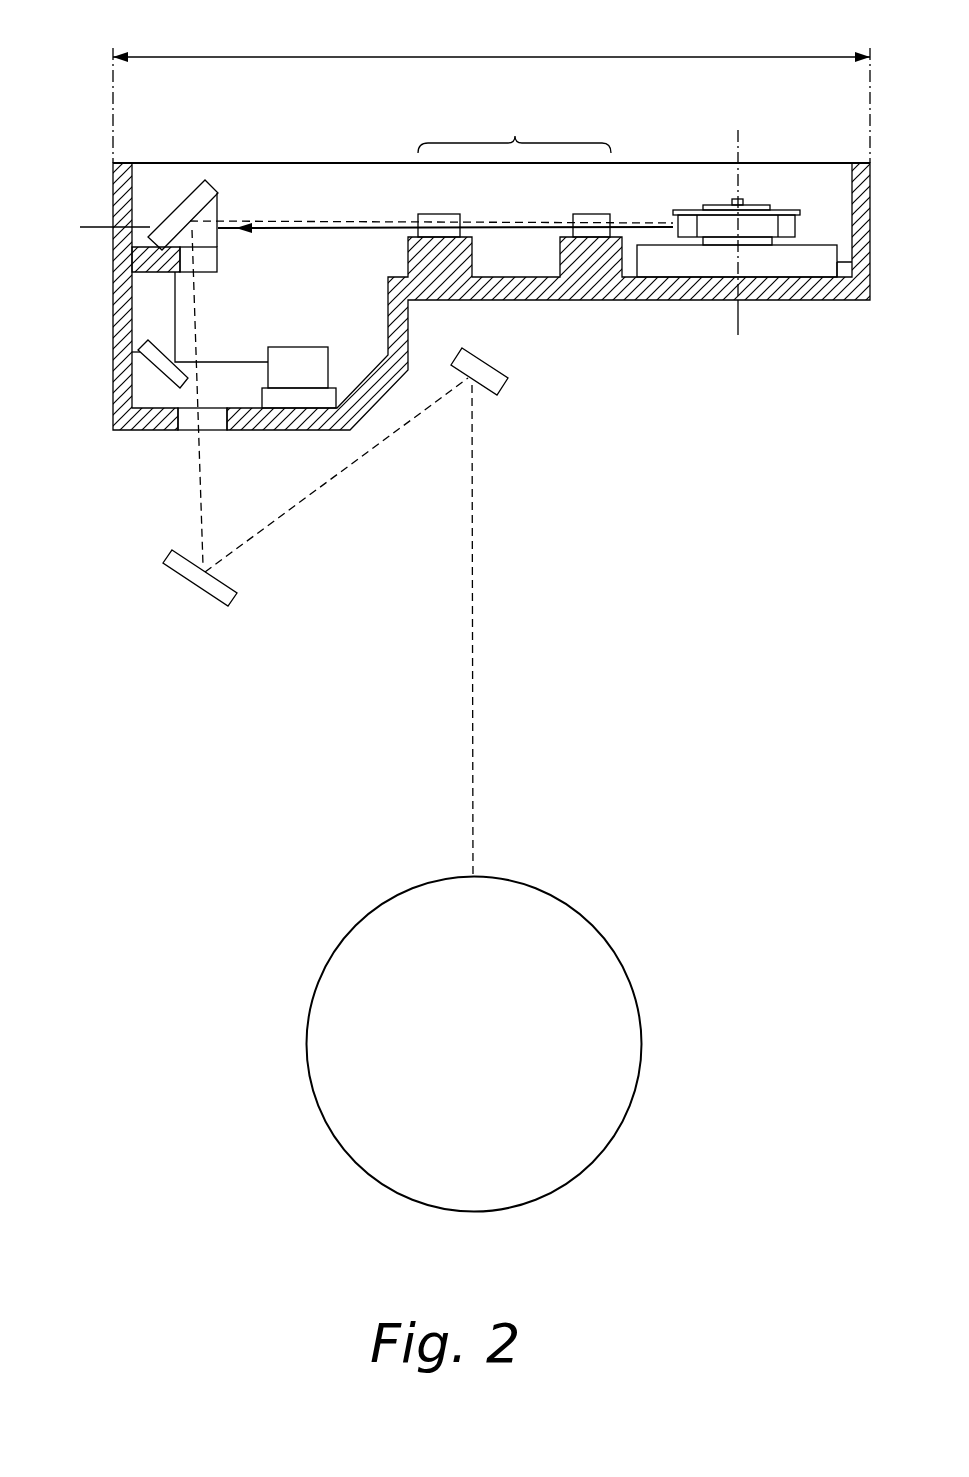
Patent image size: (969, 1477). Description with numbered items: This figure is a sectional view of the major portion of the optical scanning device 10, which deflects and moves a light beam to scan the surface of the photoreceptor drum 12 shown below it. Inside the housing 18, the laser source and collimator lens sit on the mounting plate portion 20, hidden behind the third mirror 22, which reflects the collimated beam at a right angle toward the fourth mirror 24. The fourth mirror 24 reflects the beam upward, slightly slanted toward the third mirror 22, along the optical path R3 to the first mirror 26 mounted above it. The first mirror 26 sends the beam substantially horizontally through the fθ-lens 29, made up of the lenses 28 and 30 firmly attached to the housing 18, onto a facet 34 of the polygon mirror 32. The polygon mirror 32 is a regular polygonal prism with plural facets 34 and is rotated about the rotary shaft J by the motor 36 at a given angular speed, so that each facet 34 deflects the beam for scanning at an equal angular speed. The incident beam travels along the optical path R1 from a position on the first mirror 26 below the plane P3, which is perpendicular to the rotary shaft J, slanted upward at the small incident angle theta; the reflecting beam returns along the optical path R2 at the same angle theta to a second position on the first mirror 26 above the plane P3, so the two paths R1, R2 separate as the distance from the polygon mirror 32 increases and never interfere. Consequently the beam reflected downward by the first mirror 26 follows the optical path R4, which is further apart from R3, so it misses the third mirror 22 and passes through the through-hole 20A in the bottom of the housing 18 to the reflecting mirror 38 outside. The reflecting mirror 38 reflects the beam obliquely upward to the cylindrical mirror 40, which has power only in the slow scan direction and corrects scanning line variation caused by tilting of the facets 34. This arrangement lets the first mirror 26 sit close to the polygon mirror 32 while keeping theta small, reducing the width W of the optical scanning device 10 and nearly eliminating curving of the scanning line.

The optical scanning device 10 is at (518, 348).
The photoreceptor drum 12 is at (530, 884).
The housing 18 is at (826, 306).
The mounting plate portion 20 is at (204, 329).
The through-hole 20A is at (190, 422).
The third mirror 22 is at (300, 350).
The fourth mirror 24 is at (138, 352).
The first mirror 26 is at (164, 220).
The lens 28 is at (442, 214).
The fθ-lens 29 is at (514, 169).
The lens 30 is at (590, 214).
The polygon mirror 32 is at (751, 188).
The facet 34 is at (722, 212).
The motor 36 is at (865, 262).
The reflecting mirror 38 is at (184, 583).
The cylindrical mirror 40 is at (498, 368).
The width of the optical scanning device W is at (470, 56).
The rotary shaft J is at (740, 323).
The plane P3 is at (95, 215).
The optical path of the incident light beam R1 is at (320, 220).
The optical path of the reflecting light beam R2 is at (338, 232).
The optical path from the fourth mirror to the first mirror R3 is at (175, 305).
The optical path of the light beam reflected downward by the first mirror R4 is at (195, 299).
The incident angle theta is at (272, 224).